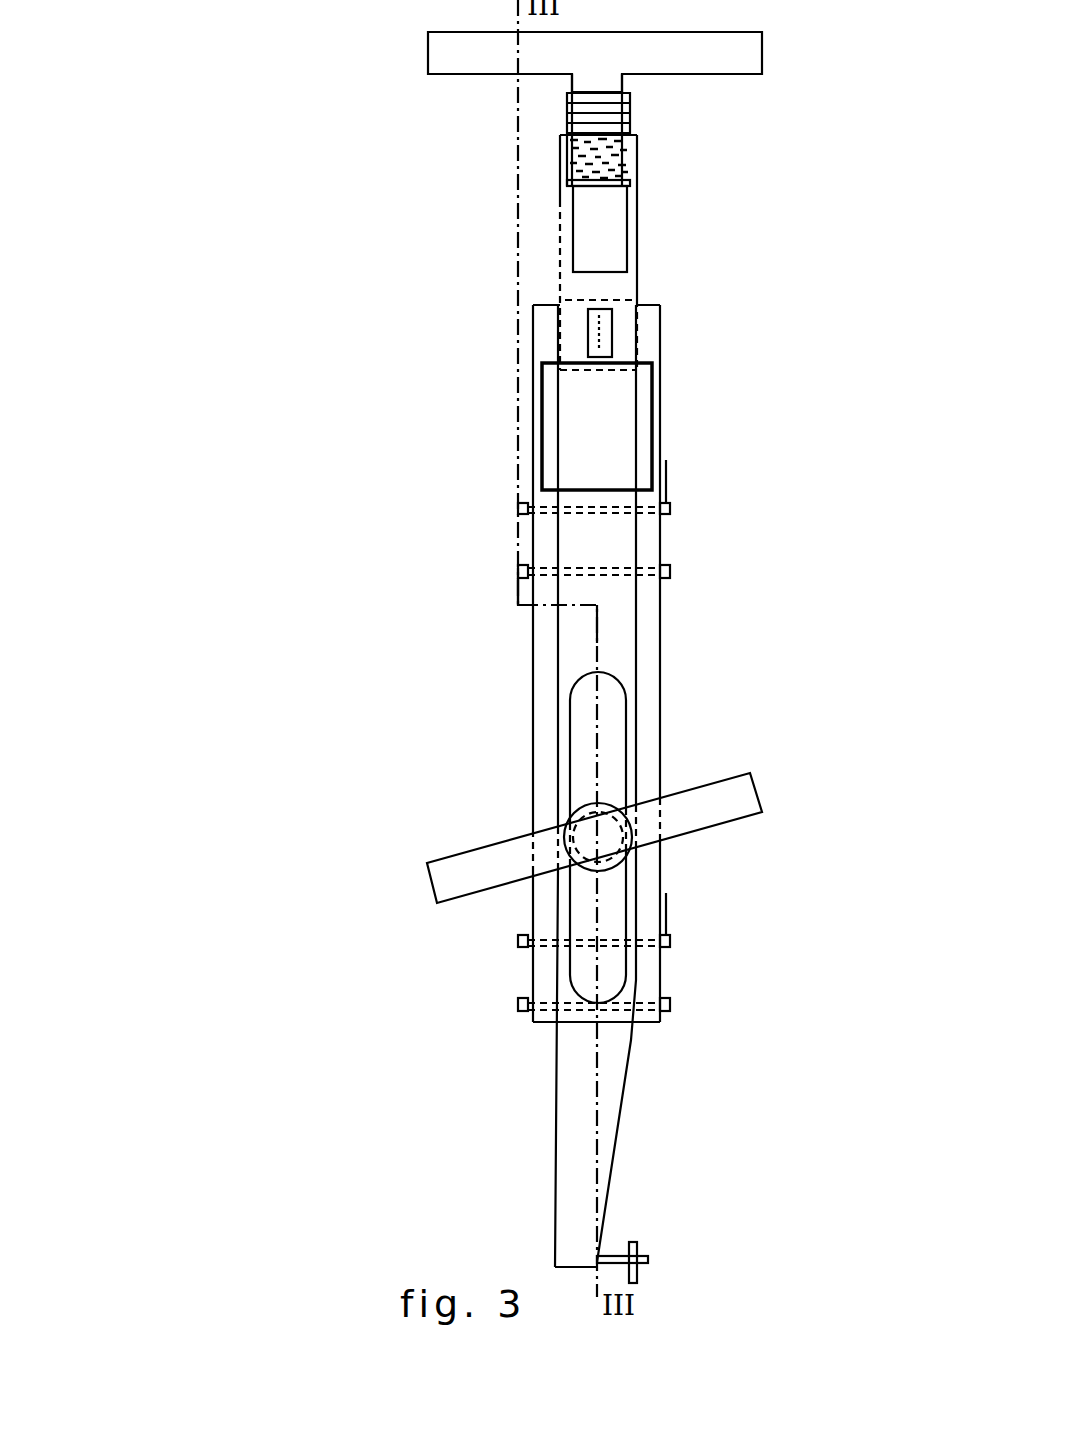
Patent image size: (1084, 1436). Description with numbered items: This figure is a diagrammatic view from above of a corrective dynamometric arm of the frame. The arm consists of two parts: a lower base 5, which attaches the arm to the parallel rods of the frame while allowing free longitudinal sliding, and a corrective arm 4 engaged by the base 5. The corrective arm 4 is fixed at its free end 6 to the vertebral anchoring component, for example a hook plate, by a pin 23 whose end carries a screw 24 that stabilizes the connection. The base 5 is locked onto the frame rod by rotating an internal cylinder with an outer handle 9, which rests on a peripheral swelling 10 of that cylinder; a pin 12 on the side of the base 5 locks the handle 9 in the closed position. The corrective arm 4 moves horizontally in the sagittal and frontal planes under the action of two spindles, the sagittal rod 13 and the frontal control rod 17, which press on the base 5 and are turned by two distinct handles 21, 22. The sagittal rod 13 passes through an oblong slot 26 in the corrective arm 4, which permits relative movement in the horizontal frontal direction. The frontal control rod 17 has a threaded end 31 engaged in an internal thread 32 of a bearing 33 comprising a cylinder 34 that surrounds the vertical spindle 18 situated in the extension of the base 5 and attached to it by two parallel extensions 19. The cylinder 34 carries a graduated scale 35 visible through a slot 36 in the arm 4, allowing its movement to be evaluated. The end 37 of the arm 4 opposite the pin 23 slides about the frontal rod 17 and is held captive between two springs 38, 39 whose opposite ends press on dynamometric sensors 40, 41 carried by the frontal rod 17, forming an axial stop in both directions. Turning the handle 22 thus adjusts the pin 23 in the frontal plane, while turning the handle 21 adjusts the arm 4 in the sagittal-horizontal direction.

The corrective arm 4 is at (597, 643).
The base 5 is at (540, 637).
The free end 6 is at (578, 1213).
The outer handle 9 is at (667, 477).
The peripheral swelling 10 is at (523, 572).
The pin 12 is at (663, 585).
The sagittal rod 13 is at (597, 838).
The frontal control rod 17 is at (597, 79).
The vertical spindle 18 is at (645, 337).
The parallel extensions 19 is at (535, 473).
The handle 21 is at (467, 868).
The handle 22 is at (507, 61).
The pin 23 is at (610, 1253).
The screw 24 is at (635, 1278).
The oblong slot 26 is at (603, 742).
The threaded end 31 is at (563, 213).
The internal thread 32 is at (560, 226).
The bearing 33 is at (567, 282).
The cylinder 34 is at (613, 368).
The graduated scale 35 is at (593, 345).
The slot 36 is at (593, 327).
The end 37 is at (633, 133).
The spring 38 is at (570, 121).
The spring 39 is at (573, 172).
The dynamometric sensor 40 is at (568, 97).
The dynamometric sensor 41 is at (603, 183).